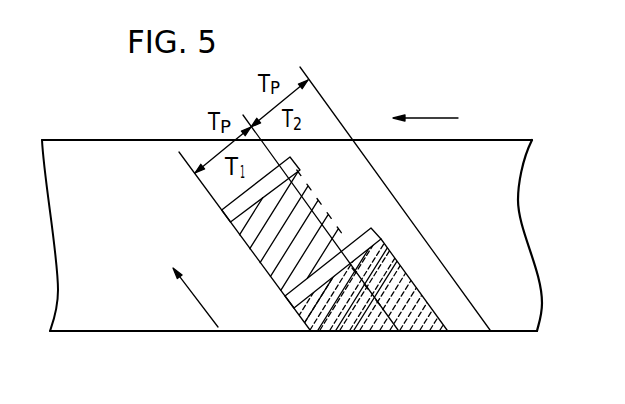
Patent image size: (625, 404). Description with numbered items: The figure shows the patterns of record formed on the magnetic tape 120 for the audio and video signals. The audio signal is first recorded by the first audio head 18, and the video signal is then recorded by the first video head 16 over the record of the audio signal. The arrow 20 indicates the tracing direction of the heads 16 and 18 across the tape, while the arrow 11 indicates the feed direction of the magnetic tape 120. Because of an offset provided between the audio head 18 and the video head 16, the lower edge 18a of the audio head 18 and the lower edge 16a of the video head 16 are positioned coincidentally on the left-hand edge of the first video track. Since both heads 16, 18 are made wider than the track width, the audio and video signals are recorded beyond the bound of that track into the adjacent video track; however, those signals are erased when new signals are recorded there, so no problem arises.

The magnetic tape 120 is at (108, 140).
The arrow 11 is at (435, 118).
The arrow 20 is at (197, 297).
The first audio head 18 is at (230, 210).
The lower edge of the audio head 18a is at (230, 224).
The first video head 16 is at (372, 229).
The lower edge of the video head 16a is at (287, 298).